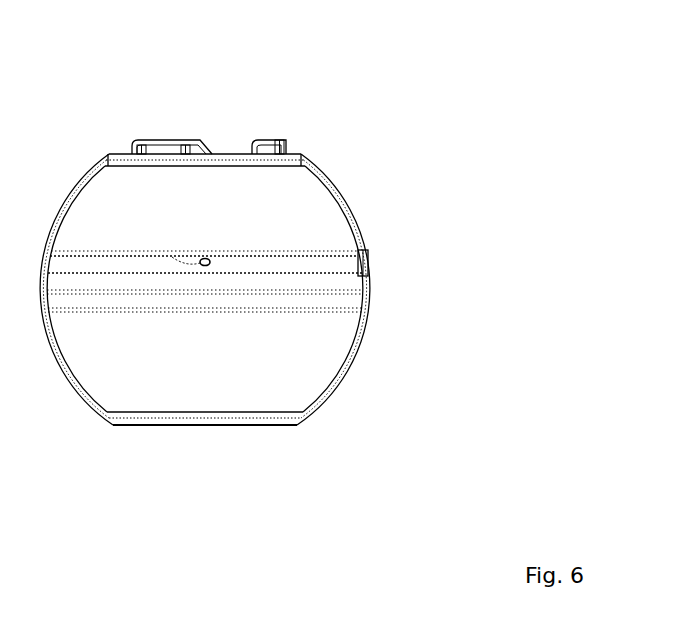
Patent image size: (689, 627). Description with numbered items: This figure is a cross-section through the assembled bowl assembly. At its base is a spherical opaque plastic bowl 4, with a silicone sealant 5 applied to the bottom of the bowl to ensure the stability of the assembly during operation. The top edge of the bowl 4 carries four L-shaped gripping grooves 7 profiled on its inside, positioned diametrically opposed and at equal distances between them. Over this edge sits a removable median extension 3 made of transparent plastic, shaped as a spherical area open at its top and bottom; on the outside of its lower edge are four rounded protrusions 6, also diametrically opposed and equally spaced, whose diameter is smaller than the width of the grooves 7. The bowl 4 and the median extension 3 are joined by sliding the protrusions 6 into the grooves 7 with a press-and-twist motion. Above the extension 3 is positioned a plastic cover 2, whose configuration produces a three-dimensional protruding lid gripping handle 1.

The lid gripping handle 1 is at (285, 140).
The plastic cover 2 is at (300, 152).
The median removable extension 3 is at (335, 182).
The opaque plastic bowl 4 is at (338, 392).
The silicone sealant 5 is at (283, 427).
The protrusions 6 is at (368, 258).
The L-shaped gripping grooves 7 is at (376, 287).